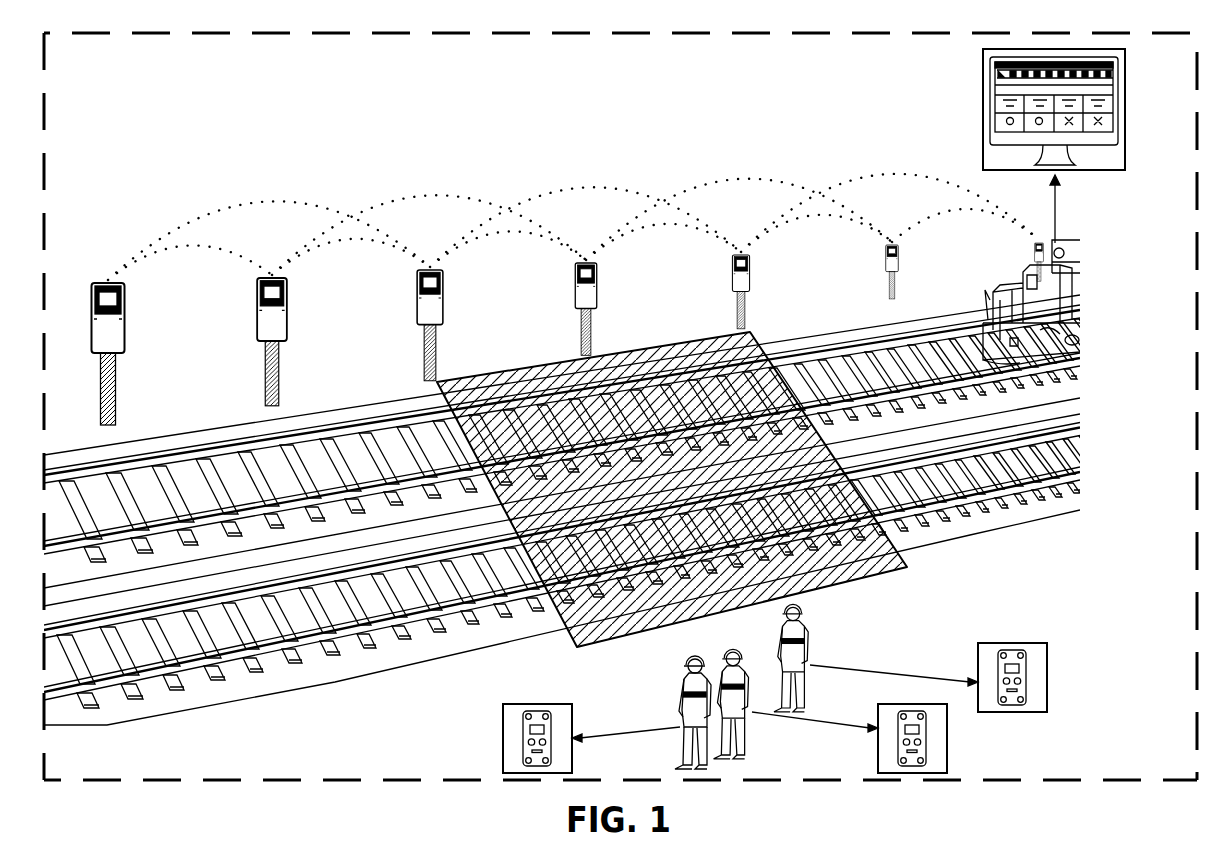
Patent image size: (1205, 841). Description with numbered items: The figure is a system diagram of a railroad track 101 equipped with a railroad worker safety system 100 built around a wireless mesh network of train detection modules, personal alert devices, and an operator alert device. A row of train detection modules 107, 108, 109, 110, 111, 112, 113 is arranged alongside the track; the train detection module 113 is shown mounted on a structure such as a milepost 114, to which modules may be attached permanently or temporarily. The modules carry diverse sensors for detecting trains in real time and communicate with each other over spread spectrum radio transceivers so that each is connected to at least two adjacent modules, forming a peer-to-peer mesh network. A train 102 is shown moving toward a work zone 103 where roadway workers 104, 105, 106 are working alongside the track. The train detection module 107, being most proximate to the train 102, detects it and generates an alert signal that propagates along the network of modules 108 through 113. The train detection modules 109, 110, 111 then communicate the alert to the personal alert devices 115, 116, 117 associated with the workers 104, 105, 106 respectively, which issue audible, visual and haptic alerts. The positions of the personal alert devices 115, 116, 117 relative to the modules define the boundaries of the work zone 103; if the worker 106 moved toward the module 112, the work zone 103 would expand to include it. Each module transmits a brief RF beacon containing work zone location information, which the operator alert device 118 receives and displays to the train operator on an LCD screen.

The system 100 is at (1197, 228).
The railroad track 101 is at (212, 427).
The train 102 is at (1068, 240).
The work zone 103 is at (905, 572).
The roadway worker 104 is at (805, 680).
The roadway worker 105 is at (747, 672).
The roadway worker 106 is at (680, 699).
The train detection module 107 is at (1035, 253).
The train detection module 108 is at (887, 258).
The train detection module 109 is at (732, 275).
The train detection module 110 is at (575, 290).
The train detection module 111 is at (417, 292).
The train detection module 112 is at (257, 293).
The train detection module 113 is at (92, 302).
The milepost 114 is at (100, 378).
The personal alert device 115 is at (1047, 680).
The personal alert device 116 is at (947, 712).
The personal alert device 117 is at (503, 738).
The operator alert device 118 is at (1125, 130).